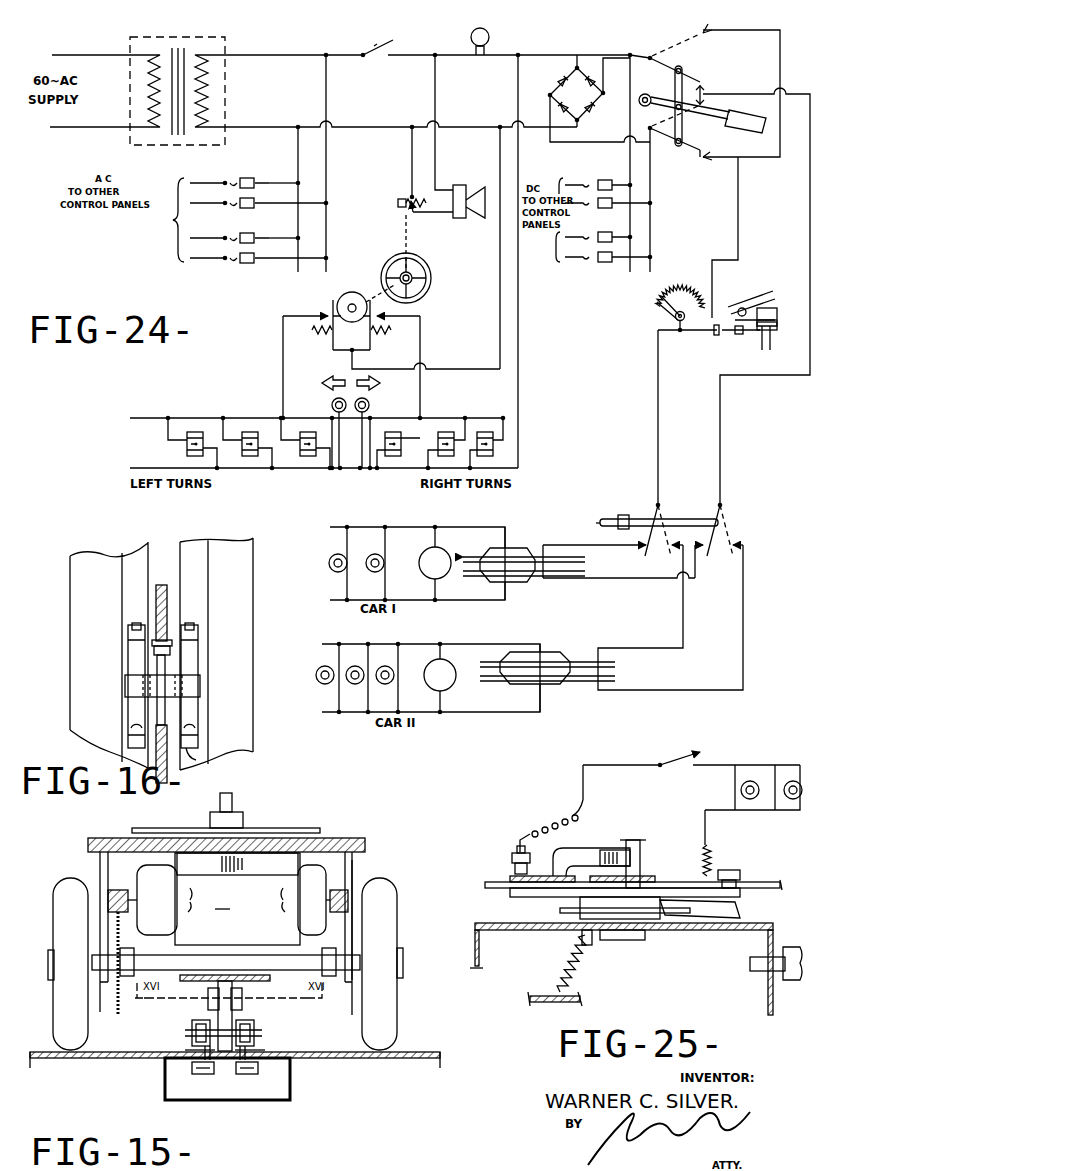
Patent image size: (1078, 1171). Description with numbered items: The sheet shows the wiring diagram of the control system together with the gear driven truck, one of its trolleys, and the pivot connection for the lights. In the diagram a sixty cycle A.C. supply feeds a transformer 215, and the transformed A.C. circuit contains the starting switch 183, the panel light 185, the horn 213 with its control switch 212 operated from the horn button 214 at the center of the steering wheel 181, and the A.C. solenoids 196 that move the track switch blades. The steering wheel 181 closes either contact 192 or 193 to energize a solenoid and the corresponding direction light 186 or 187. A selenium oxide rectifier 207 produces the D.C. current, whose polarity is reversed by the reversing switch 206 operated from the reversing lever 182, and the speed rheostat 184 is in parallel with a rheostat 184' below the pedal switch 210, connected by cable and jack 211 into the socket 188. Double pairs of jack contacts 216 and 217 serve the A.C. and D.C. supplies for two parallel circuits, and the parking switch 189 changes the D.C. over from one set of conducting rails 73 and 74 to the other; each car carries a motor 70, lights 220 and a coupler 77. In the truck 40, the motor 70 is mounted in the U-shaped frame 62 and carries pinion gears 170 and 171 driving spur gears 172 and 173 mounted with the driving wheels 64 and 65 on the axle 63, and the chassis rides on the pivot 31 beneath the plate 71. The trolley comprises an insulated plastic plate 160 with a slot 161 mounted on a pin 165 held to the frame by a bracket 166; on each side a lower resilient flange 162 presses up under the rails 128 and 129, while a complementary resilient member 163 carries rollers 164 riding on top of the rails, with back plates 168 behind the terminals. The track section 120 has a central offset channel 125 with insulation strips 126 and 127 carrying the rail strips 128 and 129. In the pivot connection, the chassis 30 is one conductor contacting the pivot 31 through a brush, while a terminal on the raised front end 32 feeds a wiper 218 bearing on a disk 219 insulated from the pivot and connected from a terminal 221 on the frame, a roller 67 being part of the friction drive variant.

In FIG. 24, the transformer 215 is at (232, 28).
In FIG. 24, the key starting switch 183 is at (383, 50).
In FIG. 24, the panel light 185 is at (489, 36).
In FIG. 24, the selenium oxide rectifier 207 is at (586, 66).
In FIG. 24, the gear shift or reversing lever 182 is at (743, 128).
In FIG. 24, the reversing switch 206 is at (690, 143).
In FIG. 24, the horn button 214 is at (408, 196).
In FIG. 24, the horn switch 212 is at (416, 214).
In FIG. 24, the horn 213 is at (473, 218).
In FIG. 24, the jack contacts 216 is at (270, 270).
In FIG. 25, the jack contacts 216 is at (600, 836).
In FIG. 24, the jack contacts 217 is at (610, 270).
In FIG. 25, the jack contacts 217 is at (735, 870).
In FIG. 24, the contact 193 is at (367, 290).
In FIG. 24, the contact 192 is at (334, 303).
In FIG. 24, the steering wheel 181 is at (425, 280).
In FIG. 24, the speed rheostat 184 is at (656, 309).
In FIG. 24, the foot or pedal switch 210 is at (738, 308).
In FIG. 24, the jack plug socket 188 is at (716, 336).
In FIG. 24, the cable and jack 211 is at (732, 334).
In FIG. 24, the rheostat 184' is at (774, 344).
In FIG. 24, the direction light 186 is at (331, 401).
In FIG. 24, the direction light 187 is at (370, 401).
In FIG. 24, the solenoids 196 is at (440, 432).
In FIG. 24, the parking switch 189 is at (623, 516).
In FIG. 24, the lights 220 is at (330, 560).
In FIG. 25, the lights 220 is at (798, 782).
In FIG. 24, the electric motor 70 is at (446, 577).
In FIG. 15, the electric motor 70 is at (270, 882).
In FIG. 24, the coupler 77 is at (512, 548).
In FIG. 24, the rail 73 is at (582, 556).
In FIG. 24, the rail 74 is at (585, 577).
In FIG. 16, the electrically conducting rail strip 128 is at (133, 551).
In FIG. 15, the electrically conducting rail strip 128 is at (205, 1046).
In FIG. 16, the electrically conducting rail strip 129 is at (195, 546).
In FIG. 15, the electrically conducting rail strip 129 is at (252, 1046).
In FIG. 16, the vertical insulated plastic plate 160 is at (157, 596).
In FIG. 15, the vertical insulated plastic plate 160 is at (232, 1002).
In FIG. 16, the slot 161 is at (162, 720).
In FIG. 16, the pin 165 is at (153, 647).
In FIG. 15, the pin 165 is at (208, 998).
In FIG. 16, the resilient member 163 is at (132, 663).
In FIG. 15, the resilient member 163 is at (252, 1024).
In FIG. 16, the friction reducing rollers 164 is at (196, 760).
In FIG. 15, the friction reducing rollers 164 is at (196, 1026).
In FIG. 15, the pivot 31 is at (233, 799).
In FIG. 25, the pivot 31 is at (640, 844).
In FIG. 15, the top plate 71 is at (355, 844).
In FIG. 15, the truck 40 is at (92, 862).
In FIG. 25, the truck 40 is at (772, 926).
In FIG. 15, the U-shaped frame 62 is at (352, 884).
In FIG. 25, the U-shaped frame 62 is at (776, 928).
In FIG. 15, the pinion gear 170 is at (110, 896).
In FIG. 15, the pinion gear 171 is at (346, 897).
In FIG. 15, the spur gear 172 is at (118, 1012).
In FIG. 15, the front axle 63 is at (164, 958).
In FIG. 15, the front driving wheel 64 is at (58, 934).
In FIG. 15, the front driving wheel 65 is at (390, 1008).
In FIG. 15, the bracket 166 is at (262, 984).
In FIG. 15, the insulation strip 126 is at (190, 1050).
In FIG. 15, the spur gear 173 is at (303, 1044).
In FIG. 15, the pressed metal track section 120 is at (372, 1060).
In FIG. 15, the insulation strip 127 is at (308, 1060).
In FIG. 15, the central offset channel 125 is at (254, 1101).
In FIG. 15, the back plates 168 is at (204, 1075).
In FIG. 15, the resilient flange 162 is at (260, 1070).
In FIG. 25, the chassis 30 is at (494, 876).
In FIG. 25, the offset or raised front end 32 is at (694, 888).
In FIG. 25, the wiper 218 is at (740, 910).
In FIG. 25, the rubber roller 67 is at (792, 980).
In FIG. 25, the disk 219 is at (648, 940).
In FIG. 25, the terminal 221 is at (584, 950).